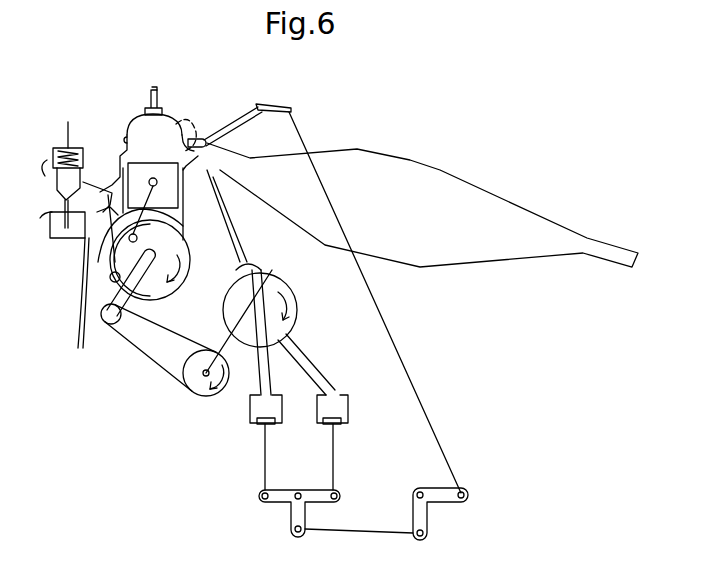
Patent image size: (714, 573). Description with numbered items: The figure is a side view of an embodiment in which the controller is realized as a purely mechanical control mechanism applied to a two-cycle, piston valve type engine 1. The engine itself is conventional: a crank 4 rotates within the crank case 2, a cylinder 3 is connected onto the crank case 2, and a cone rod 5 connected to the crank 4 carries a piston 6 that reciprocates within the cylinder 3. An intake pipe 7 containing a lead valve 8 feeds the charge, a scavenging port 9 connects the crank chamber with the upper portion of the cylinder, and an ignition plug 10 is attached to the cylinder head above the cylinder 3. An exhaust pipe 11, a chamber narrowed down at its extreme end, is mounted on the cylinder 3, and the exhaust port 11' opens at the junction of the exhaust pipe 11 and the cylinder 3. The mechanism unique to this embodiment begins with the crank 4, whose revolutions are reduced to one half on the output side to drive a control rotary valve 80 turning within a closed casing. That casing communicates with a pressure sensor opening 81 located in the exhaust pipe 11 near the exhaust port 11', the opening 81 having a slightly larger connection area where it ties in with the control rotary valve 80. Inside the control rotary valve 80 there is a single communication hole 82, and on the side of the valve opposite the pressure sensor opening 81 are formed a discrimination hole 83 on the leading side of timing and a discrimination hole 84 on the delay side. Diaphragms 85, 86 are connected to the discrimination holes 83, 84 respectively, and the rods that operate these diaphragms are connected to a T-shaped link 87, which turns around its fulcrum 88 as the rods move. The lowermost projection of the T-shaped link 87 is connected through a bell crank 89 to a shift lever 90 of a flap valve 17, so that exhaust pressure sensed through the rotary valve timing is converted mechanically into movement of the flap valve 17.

The engine 1 is at (127, 116).
The crank case 2 is at (110, 282).
The cylinder 3 is at (125, 140).
The crank 4 is at (173, 245).
The cone rod 5 is at (176, 222).
The piston 6 is at (153, 178).
The intake pipe 7 is at (71, 240).
The lead valve 8 is at (95, 260).
The scavenging port 9 is at (118, 177).
The ignition plug 10 is at (157, 100).
The exhaust pipe 11 is at (422, 196).
The exhaust port 11' is at (252, 228).
The flap valve 17 is at (197, 138).
The control rotary valve 80 is at (292, 298).
The pressure sensor opening 81 is at (214, 180).
The communication hole 82 is at (256, 276).
The discrimination hole 83 is at (316, 372).
The discrimination hole 84 is at (255, 390).
The diaphragm 85 is at (336, 426).
The diaphragm 86 is at (257, 426).
The T-shaped link 87 is at (294, 516).
The fulcrum 88 is at (298, 490).
The bell crank 89 is at (422, 516).
The shift lever 90 is at (272, 104).